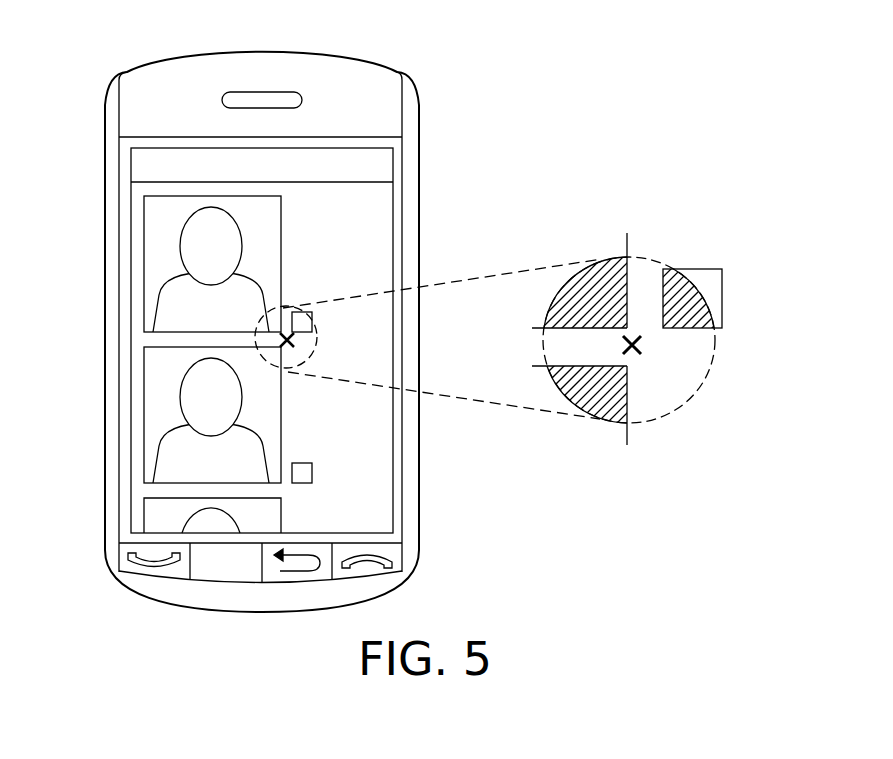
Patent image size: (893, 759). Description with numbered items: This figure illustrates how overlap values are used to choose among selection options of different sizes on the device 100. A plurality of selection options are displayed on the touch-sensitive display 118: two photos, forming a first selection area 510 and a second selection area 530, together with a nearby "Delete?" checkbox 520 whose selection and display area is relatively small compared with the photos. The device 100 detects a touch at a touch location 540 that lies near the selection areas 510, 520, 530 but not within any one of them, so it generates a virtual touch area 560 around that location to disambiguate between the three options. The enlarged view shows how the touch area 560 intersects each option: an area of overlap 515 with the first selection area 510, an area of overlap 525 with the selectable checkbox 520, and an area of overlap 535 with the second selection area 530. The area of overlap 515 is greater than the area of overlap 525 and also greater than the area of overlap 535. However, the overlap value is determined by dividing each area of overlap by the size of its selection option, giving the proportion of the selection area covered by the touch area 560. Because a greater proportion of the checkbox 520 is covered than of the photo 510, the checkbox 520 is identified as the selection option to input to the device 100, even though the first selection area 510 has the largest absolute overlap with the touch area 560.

The device 100 is at (93, 34).
The touch-sensitive display 118 is at (131, 195).
The first selection area 510 is at (144, 317).
The area of overlap 515 is at (588, 282).
The checkbox 520 is at (306, 312).
The area of overlap 525 is at (700, 310).
The second selection area 530 is at (144, 467).
The area of overlap 535 is at (582, 400).
The touch location 540 is at (290, 347).
The touch area 560 is at (317, 344).